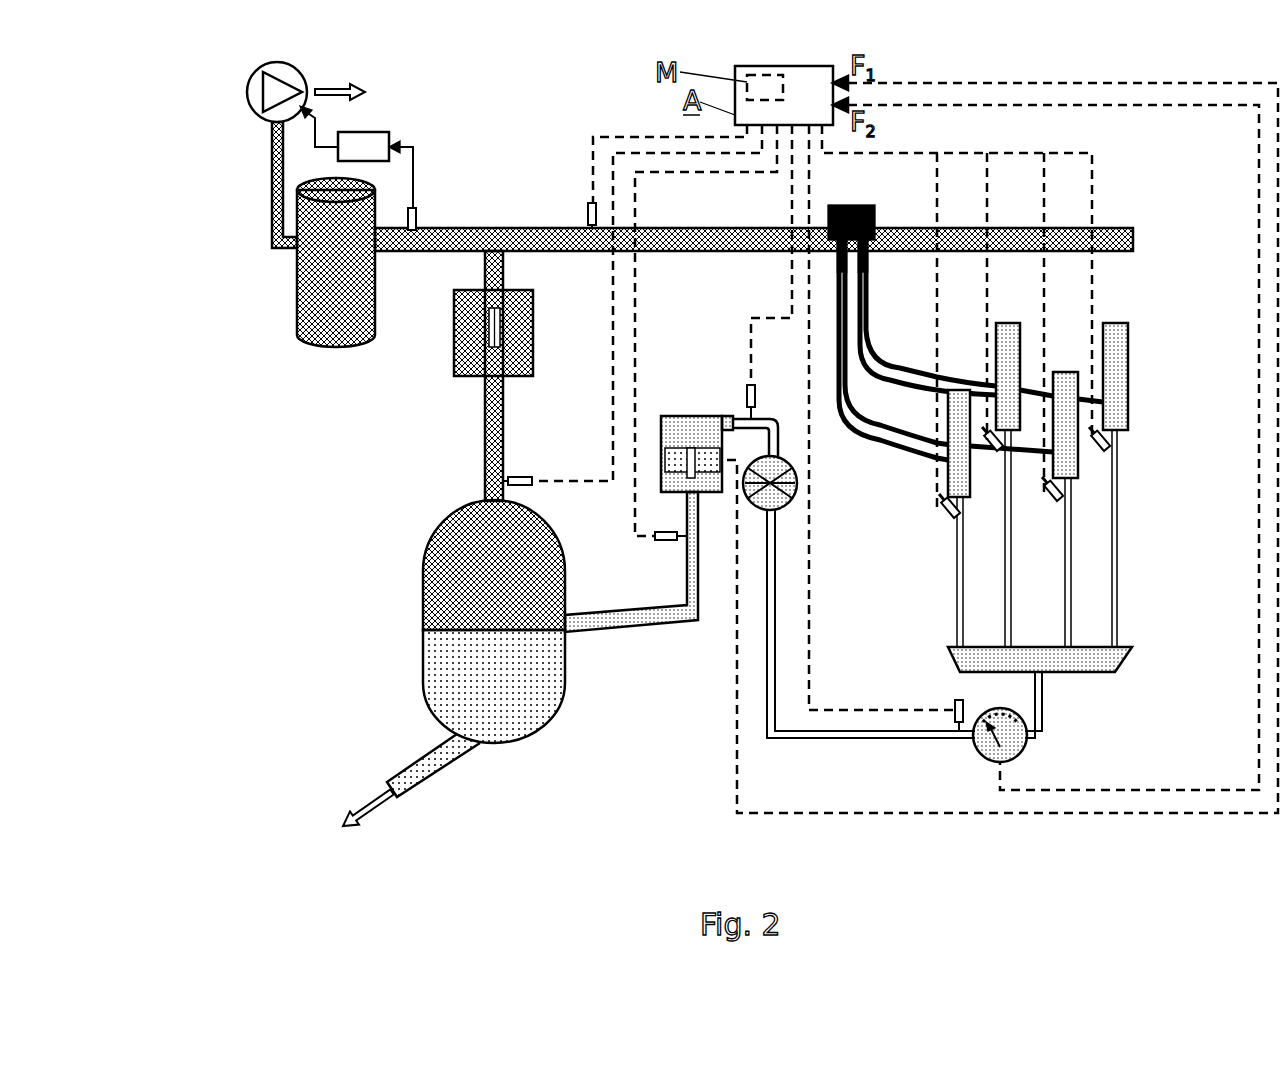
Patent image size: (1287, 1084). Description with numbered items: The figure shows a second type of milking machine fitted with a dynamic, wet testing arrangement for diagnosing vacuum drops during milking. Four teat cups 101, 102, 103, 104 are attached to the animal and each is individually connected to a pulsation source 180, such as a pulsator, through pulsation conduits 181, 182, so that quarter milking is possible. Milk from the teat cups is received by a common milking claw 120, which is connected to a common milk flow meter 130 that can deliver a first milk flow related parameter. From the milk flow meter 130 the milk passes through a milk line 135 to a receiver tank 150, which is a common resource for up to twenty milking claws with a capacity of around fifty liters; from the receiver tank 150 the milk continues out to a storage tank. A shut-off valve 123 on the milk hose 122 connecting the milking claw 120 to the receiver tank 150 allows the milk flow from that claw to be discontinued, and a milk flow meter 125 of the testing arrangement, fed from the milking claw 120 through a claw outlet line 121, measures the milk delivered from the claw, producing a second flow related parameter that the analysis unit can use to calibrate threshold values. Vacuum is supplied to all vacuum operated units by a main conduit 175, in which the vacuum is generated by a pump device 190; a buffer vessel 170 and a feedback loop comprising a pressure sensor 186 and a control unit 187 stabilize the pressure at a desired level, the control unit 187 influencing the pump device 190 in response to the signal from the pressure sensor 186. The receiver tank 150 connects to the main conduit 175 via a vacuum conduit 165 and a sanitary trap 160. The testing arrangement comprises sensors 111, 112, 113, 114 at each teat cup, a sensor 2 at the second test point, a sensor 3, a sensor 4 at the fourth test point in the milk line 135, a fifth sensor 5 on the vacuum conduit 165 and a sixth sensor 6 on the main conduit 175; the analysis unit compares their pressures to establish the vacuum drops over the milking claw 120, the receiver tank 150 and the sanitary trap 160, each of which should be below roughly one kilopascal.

The pump device 190 is at (247, 97).
The control unit 187 is at (392, 128).
The pressure sensor 186 is at (417, 208).
The main conduit 175 is at (543, 228).
The buffer vessel 170 is at (300, 338).
The vacuum conduit 165 is at (485, 425).
The sanitary trap 160 is at (535, 327).
The receiver tank 150 is at (425, 590).
The milk line 135 is at (620, 630).
The milk flow meter 130 is at (708, 413).
The shut-off valve 123 is at (792, 503).
The milk flow meter 125 is at (1024, 750).
The milk hose 122 is at (832, 740).
The collector outlet line 121 is at (1042, 700).
The milking claw 120 is at (1123, 660).
The pulsation source 180 is at (883, 187).
The pulsation conduit 181 is at (884, 434).
The pulsation conduit 182 is at (865, 298).
The teat cup 101 is at (950, 392).
The teat cup 102 is at (1002, 322).
The teat cup 103 is at (1073, 372).
The teat cup 104 is at (1128, 373).
The sensor 111 is at (943, 505).
The sensor 112 is at (1000, 435).
The sensor 113 is at (1057, 497).
The sensor 114 is at (1110, 443).
The sensor 2 is at (955, 700).
The sensor 3 is at (757, 395).
The sensor 4 is at (663, 543).
The fifth sensor 5 is at (518, 477).
The sixth sensor 6 is at (587, 203).